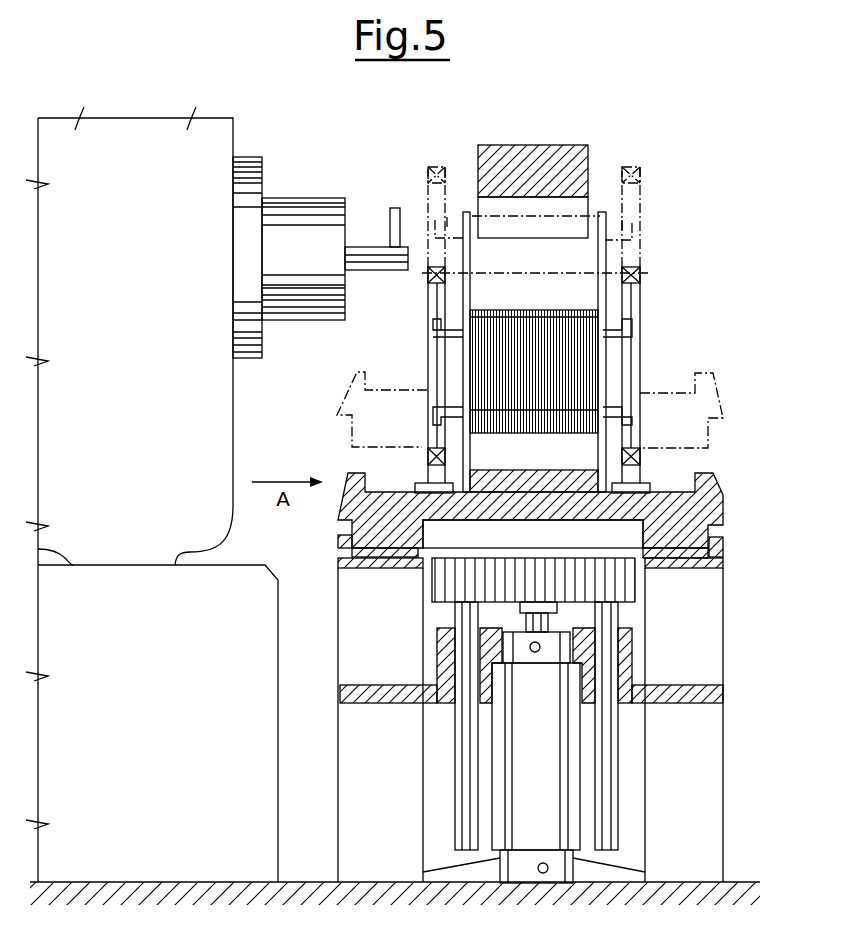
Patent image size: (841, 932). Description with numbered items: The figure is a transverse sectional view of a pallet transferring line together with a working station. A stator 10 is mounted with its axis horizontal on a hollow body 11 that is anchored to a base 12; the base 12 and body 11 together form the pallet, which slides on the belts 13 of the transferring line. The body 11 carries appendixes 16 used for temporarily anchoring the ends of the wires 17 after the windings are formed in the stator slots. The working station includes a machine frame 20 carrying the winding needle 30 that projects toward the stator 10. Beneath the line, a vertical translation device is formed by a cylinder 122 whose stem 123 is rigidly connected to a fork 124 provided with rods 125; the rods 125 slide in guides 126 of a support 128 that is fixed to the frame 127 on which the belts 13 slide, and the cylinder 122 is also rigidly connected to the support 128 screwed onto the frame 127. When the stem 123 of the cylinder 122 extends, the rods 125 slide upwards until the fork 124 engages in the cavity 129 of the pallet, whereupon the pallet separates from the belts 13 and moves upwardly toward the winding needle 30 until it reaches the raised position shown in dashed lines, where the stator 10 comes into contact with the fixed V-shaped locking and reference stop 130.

The stator 10 is at (558, 330).
The hollow body 11 is at (570, 457).
The base 12 is at (724, 397).
The belts 13 is at (712, 555).
The appendixes 16 is at (628, 198).
The wires 17 is at (437, 302).
The machine frame 20 is at (210, 430).
The winding needle 30 is at (366, 250).
The cylinder 122 is at (560, 753).
The stem 123 is at (550, 620).
The fork 124 is at (622, 582).
The rods 125 is at (462, 792).
The guides 126 is at (440, 652).
The frame 127 is at (692, 567).
The support 128 is at (365, 698).
The cavity 129 is at (613, 520).
The V-shaped locking and reference stop 130 is at (572, 167).